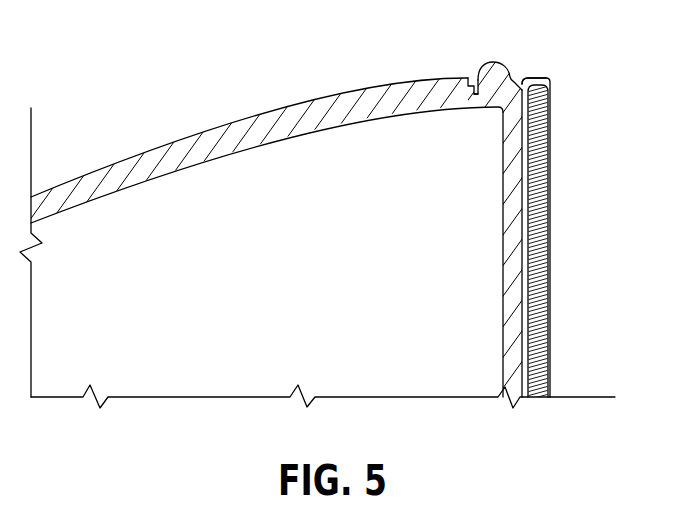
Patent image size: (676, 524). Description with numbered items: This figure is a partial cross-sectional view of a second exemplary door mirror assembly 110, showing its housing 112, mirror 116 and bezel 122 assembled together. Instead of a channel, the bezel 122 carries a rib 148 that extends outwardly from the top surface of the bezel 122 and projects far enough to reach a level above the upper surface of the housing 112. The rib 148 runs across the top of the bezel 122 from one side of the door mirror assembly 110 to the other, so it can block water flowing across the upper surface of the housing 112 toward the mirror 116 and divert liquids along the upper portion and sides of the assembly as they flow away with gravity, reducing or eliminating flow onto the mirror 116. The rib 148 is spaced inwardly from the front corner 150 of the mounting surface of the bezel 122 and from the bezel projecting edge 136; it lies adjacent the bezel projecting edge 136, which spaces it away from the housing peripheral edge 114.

The door mirror assembly 110 is at (131, 114).
The housing 112 is at (295, 101).
The housing peripheral edge 114 is at (474, 95).
The mirror 116 is at (551, 207).
The bezel 122 is at (503, 212).
The bezel projecting edge 136 is at (475, 77).
The rib 148 is at (497, 62).
The front corner 150 is at (550, 79).